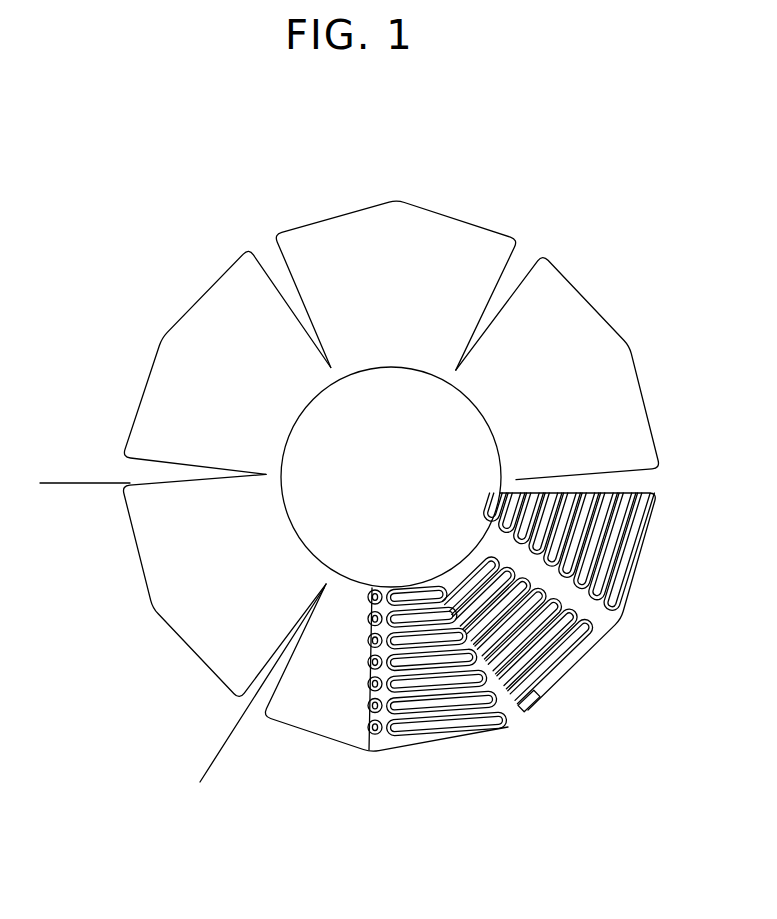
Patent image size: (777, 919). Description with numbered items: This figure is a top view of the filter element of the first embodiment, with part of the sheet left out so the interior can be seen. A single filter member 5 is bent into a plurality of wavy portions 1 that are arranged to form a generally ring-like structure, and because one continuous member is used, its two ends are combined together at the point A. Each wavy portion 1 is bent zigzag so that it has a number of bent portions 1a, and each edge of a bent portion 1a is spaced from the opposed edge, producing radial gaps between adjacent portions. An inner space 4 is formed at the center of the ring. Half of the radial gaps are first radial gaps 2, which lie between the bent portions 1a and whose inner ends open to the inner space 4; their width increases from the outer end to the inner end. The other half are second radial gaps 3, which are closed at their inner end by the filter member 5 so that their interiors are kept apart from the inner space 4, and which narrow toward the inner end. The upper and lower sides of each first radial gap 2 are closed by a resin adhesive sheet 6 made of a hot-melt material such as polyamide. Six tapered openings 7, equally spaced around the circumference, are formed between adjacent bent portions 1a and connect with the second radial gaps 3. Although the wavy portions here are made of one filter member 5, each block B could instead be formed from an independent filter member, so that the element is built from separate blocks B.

The wavy portion 1 is at (580, 652).
The bent portion 1a is at (382, 748).
The first radial gap 2 is at (522, 557).
The second radial gap 3 is at (515, 711).
The inner space 4 is at (391, 524).
The filter member 5 is at (600, 640).
The resin adhesive sheet 6 is at (386, 712).
The opening 7 is at (260, 697).
The point A is at (537, 696).
The block B is at (50, 485).